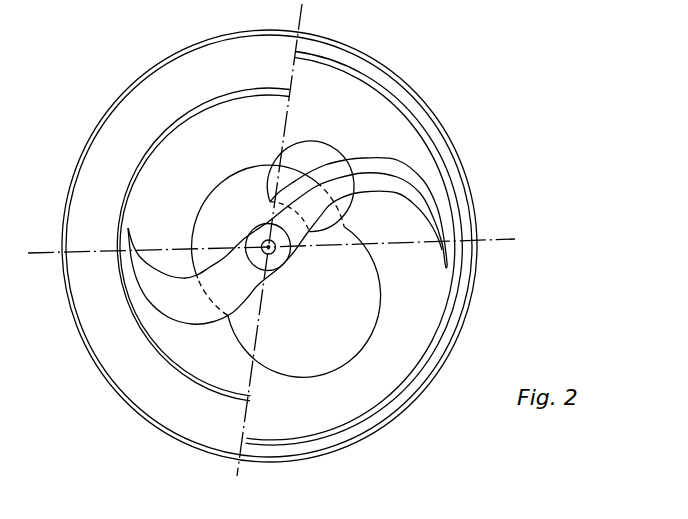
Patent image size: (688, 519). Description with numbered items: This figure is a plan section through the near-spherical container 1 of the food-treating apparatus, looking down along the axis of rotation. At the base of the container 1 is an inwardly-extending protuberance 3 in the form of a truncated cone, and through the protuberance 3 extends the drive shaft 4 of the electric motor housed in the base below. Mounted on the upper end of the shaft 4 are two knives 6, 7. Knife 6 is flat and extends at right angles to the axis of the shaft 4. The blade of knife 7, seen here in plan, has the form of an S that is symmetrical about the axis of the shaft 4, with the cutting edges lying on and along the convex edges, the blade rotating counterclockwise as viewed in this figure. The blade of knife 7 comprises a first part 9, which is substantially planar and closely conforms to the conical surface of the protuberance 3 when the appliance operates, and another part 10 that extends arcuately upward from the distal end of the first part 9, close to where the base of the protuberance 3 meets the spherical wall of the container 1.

The container 1 is at (461, 156).
The protuberance 3 is at (331, 291).
The drive shaft 4 is at (275, 250).
The knife 6 is at (195, 312).
The knife 7 is at (336, 210).
The first part 9 is at (312, 184).
The other part 10 is at (357, 186).